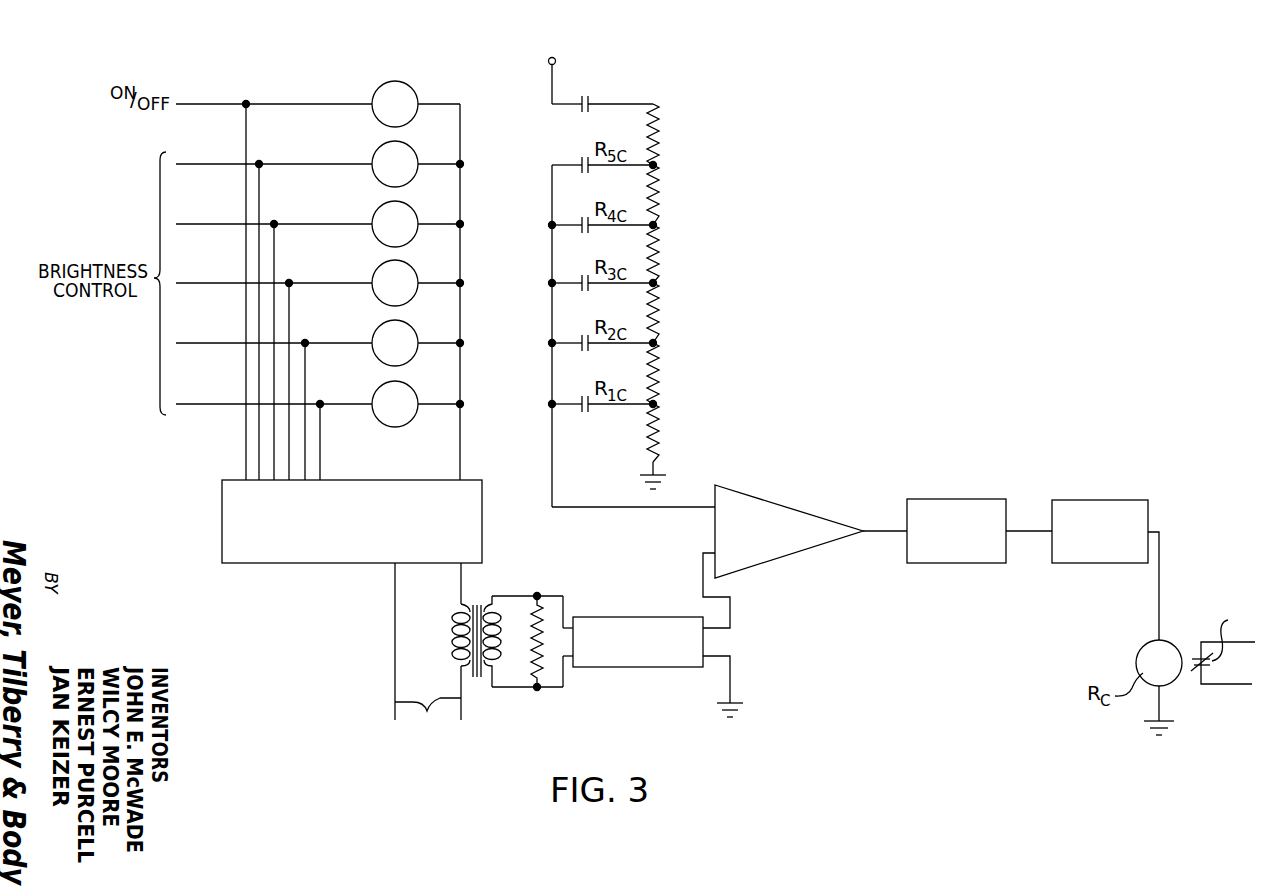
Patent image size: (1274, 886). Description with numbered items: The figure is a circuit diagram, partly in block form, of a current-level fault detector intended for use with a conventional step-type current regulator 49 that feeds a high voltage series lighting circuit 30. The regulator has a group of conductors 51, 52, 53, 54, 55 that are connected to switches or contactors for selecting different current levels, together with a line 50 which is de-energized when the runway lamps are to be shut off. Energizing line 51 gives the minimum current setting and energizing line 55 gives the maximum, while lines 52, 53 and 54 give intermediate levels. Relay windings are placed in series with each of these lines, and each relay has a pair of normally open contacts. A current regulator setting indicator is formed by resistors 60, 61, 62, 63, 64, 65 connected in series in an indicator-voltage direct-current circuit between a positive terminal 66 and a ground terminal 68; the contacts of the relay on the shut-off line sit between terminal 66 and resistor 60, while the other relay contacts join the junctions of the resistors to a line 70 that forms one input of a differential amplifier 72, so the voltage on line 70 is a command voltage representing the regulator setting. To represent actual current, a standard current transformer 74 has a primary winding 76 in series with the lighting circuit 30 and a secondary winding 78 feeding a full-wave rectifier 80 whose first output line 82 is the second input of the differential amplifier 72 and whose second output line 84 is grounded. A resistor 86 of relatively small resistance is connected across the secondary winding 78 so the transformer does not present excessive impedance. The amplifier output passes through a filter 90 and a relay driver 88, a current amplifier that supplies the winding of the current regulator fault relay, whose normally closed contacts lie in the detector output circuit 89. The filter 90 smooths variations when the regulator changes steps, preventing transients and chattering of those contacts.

The high voltage series lighting circuit 30 is at (428, 648).
The current regulator 49 is at (256, 565).
The line 50 is at (358, 102).
The conductor 51 is at (368, 402).
The conductor 52 is at (365, 341).
The conductor 53 is at (368, 281).
The conductor 54 is at (362, 222).
The conductor 55 is at (357, 163).
The resistor 60 is at (660, 143).
The resistor 61 is at (660, 425).
The resistor 62 is at (660, 375).
The resistor 63 is at (660, 322).
The resistor 64 is at (660, 264).
The resistor 65 is at (660, 207).
The positive terminal 66 is at (556, 62).
The ground terminal 68 is at (660, 472).
The line 70 is at (580, 507).
The differential amplifier 72 is at (765, 500).
The current transformer 74 is at (486, 598).
The primary winding 76 is at (452, 642).
The secondary winding 78 is at (498, 690).
The full-wave rectifier 80 is at (618, 667).
The first output line 82 is at (703, 578).
The second output line 84 is at (730, 672).
The resistor 86 is at (544, 666).
The relay driver 88 is at (1060, 507).
The detector output circuit 89 is at (1228, 685).
The filter 90 is at (971, 507).